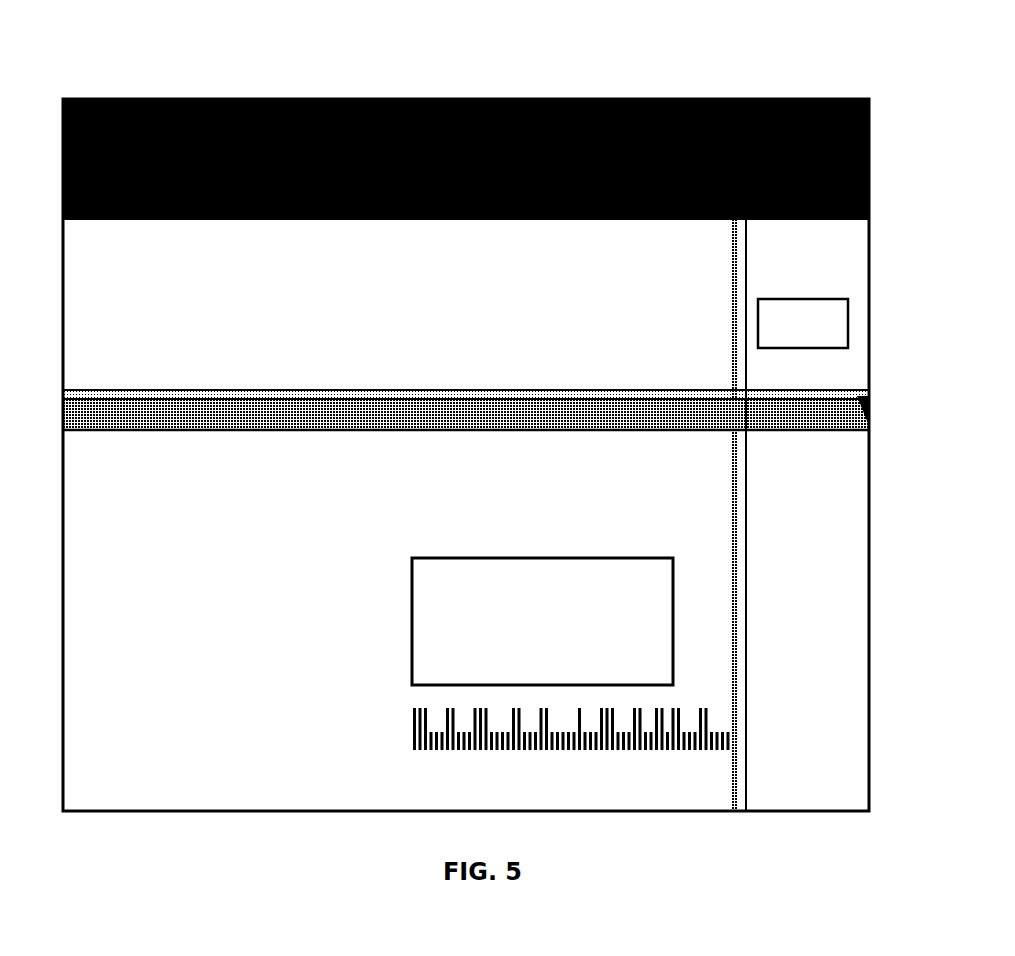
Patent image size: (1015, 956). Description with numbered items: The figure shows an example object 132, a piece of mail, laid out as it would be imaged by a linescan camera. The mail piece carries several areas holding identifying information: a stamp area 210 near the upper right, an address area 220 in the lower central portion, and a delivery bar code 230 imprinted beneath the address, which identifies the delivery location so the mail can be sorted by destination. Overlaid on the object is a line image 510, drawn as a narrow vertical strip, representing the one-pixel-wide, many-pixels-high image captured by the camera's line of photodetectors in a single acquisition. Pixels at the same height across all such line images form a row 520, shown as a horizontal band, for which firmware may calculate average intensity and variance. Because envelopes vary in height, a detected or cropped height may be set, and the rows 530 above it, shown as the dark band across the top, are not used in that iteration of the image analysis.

The object 132 is at (670, 73).
The rows above the cropped height 530 is at (872, 100).
The line image 510 is at (738, 562).
The row of pixels 520 is at (833, 415).
The stamp area 210 is at (826, 298).
The address area 220 is at (553, 558).
The delivery bar code 230 is at (412, 722).